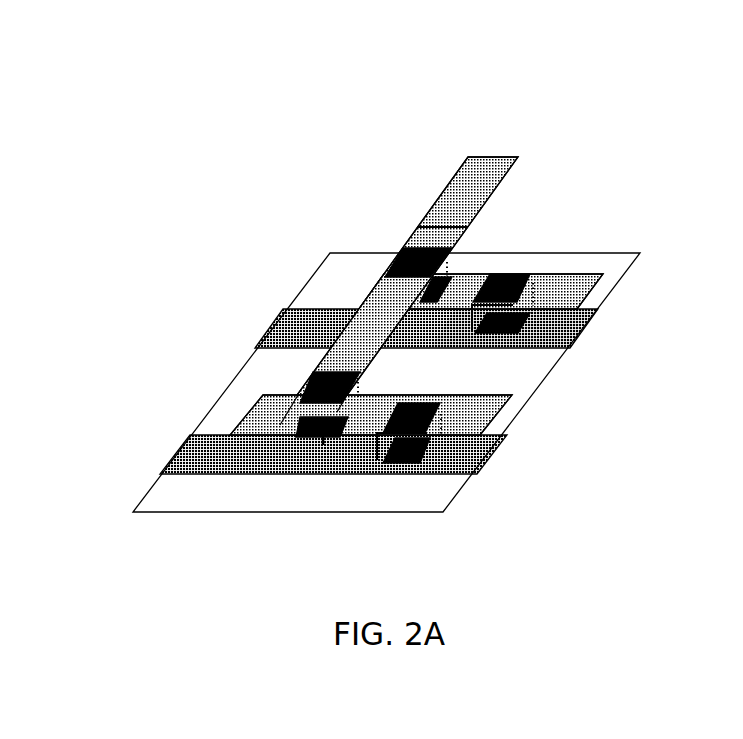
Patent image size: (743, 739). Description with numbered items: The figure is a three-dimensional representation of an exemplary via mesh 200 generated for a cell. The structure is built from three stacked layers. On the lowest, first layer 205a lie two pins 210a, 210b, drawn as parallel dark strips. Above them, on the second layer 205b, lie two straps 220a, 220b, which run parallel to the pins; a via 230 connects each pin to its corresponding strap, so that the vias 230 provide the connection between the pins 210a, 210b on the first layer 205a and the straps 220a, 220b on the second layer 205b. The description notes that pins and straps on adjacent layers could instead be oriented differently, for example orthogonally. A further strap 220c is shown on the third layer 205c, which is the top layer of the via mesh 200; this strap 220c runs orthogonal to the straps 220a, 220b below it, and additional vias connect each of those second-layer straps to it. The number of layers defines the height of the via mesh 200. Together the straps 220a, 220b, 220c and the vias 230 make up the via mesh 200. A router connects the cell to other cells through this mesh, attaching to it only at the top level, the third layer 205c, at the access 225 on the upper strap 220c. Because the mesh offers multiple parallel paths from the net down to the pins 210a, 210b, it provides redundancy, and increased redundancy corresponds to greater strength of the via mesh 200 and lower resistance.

The via mesh 200 is at (297, 157).
The first layer 205a is at (618, 301).
The second layer 205b is at (614, 272).
The third layer 205c is at (487, 227).
The pin 210a is at (186, 450).
The pin 210b is at (293, 333).
The strap 220a is at (477, 410).
The strap 220b is at (565, 293).
The strap 220c is at (392, 290).
The access 225 is at (493, 177).
The via 230 is at (456, 333).